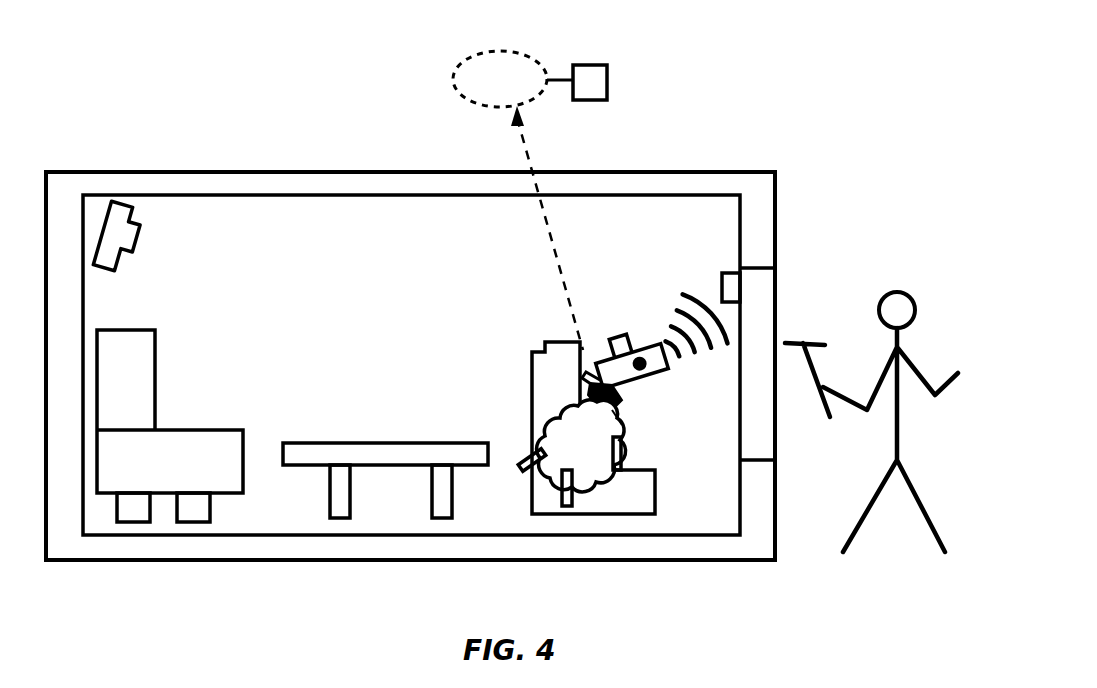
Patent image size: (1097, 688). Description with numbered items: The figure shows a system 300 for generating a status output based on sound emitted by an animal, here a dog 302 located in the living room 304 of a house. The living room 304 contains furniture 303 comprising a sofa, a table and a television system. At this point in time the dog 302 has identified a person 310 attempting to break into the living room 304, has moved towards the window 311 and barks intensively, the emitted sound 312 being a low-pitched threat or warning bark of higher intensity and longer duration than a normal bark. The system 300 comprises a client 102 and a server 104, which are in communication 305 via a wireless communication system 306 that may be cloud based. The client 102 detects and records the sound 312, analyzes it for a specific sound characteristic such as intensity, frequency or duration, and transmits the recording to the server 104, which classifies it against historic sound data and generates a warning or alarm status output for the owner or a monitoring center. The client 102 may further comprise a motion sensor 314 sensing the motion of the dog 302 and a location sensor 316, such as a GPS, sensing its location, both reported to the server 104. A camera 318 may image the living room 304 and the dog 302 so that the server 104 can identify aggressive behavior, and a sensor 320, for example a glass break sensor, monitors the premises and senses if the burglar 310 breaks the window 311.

The system 300 is at (703, 92).
The server 104 is at (603, 77).
The wireless communication system 306 is at (455, 78).
The communication 305 is at (553, 237).
The sound 312 is at (700, 293).
The person 310 is at (895, 297).
The sensor 320 is at (735, 288).
The window 311 is at (750, 328).
The camera 318 is at (113, 222).
The living room 304 is at (310, 228).
The furniture 303 is at (272, 510).
The dog 302 is at (588, 443).
The client 102 is at (600, 405).
The motion sensor 314 is at (627, 413).
The location sensor 316 is at (628, 418).